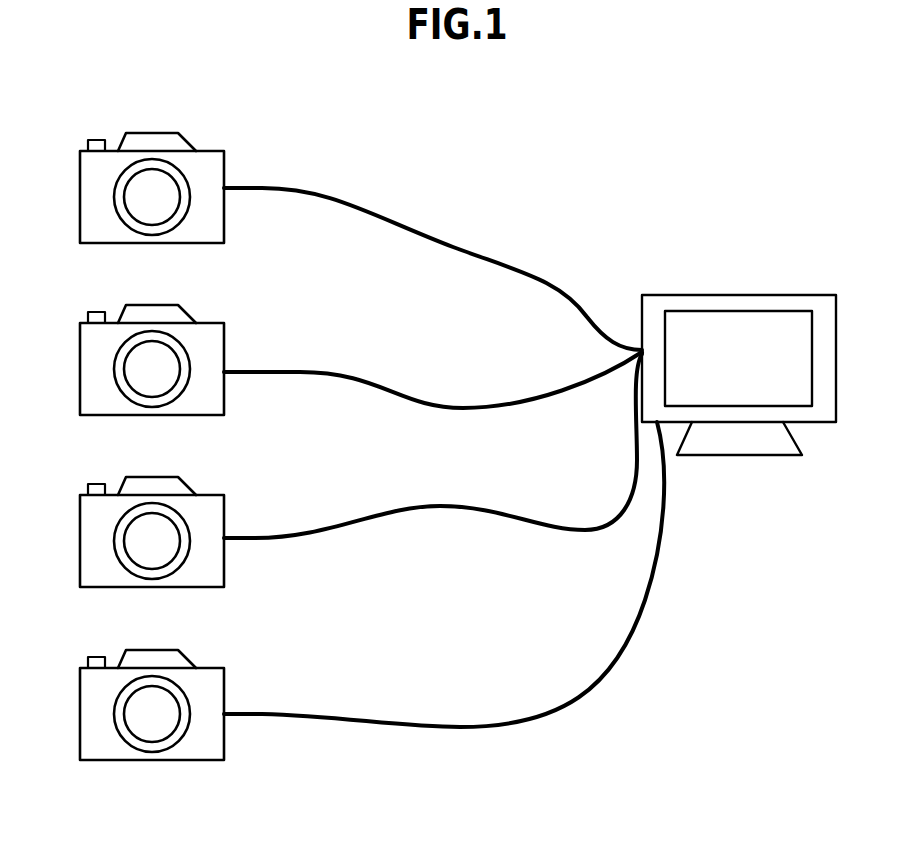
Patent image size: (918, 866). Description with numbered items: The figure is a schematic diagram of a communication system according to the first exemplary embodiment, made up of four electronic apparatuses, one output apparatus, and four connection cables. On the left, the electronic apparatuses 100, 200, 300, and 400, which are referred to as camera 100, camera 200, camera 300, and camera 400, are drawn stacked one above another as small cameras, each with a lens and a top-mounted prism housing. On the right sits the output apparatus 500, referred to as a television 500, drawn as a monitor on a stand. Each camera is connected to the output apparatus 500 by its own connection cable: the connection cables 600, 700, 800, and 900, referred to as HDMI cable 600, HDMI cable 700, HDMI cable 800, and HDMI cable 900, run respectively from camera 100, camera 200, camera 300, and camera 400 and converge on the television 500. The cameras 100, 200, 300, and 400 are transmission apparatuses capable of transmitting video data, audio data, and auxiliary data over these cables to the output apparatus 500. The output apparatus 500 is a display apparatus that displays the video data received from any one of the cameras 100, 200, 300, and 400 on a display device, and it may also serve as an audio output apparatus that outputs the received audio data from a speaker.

The electronic apparatus (camera) 100 is at (207, 151).
The electronic apparatus (camera) 200 is at (207, 323).
The electronic apparatus (camera) 300 is at (207, 495).
The electronic apparatus (camera) 400 is at (207, 668).
The output apparatus (television) 500 is at (734, 295).
The connection cable (HDMI cable) 600 is at (428, 231).
The connection cable (HDMI cable) 700 is at (422, 401).
The connection cable (HDMI cable) 800 is at (430, 506).
The connection cable (HDMI cable) 900 is at (430, 725).